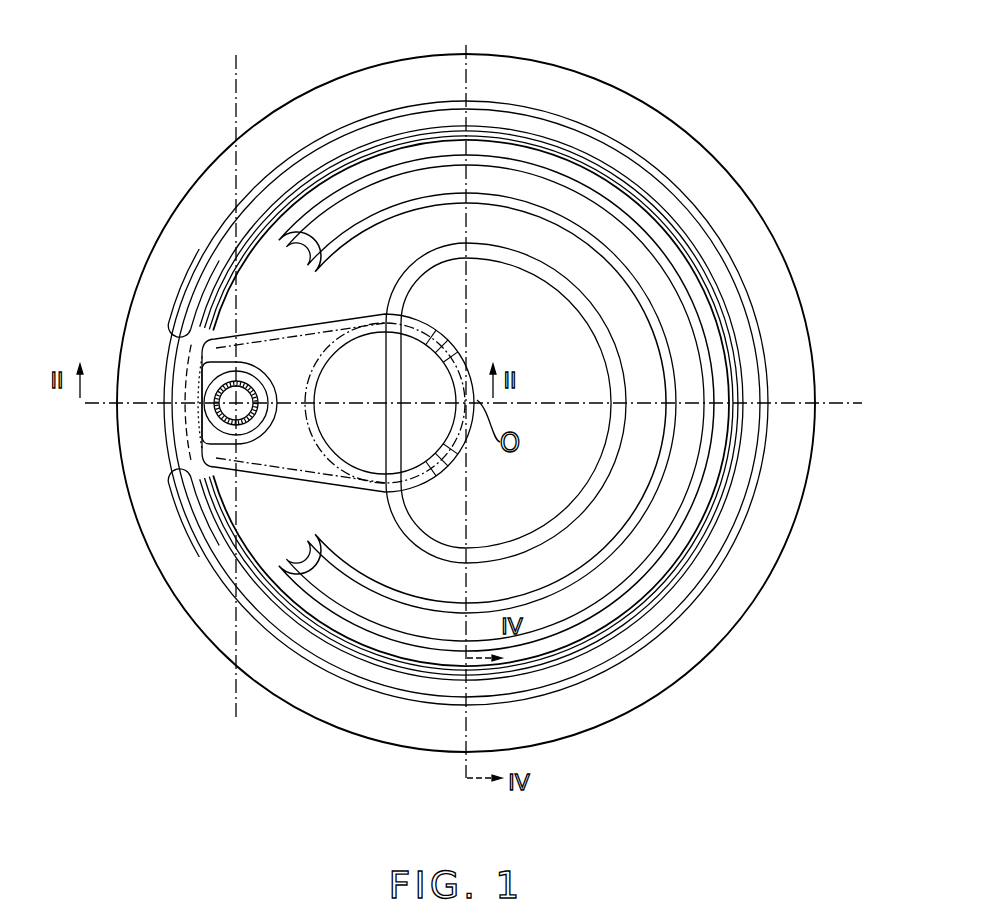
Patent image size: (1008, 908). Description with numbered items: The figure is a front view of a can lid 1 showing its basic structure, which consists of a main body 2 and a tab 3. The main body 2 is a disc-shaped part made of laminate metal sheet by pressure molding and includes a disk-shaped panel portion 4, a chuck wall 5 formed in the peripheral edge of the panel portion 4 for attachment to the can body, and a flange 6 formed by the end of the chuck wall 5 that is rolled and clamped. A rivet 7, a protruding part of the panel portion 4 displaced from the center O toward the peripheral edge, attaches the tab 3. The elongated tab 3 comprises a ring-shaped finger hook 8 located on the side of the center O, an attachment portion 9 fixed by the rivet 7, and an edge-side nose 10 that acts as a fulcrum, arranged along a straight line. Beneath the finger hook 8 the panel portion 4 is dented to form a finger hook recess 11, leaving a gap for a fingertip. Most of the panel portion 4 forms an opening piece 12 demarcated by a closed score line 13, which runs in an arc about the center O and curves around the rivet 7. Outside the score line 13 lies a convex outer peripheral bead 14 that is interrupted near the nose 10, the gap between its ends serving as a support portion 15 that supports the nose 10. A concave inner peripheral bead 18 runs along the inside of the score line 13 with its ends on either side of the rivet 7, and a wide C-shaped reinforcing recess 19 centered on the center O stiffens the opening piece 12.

The can lid 1 is at (671, 47).
The main body 2 is at (747, 197).
The tab 3 is at (293, 320).
The panel portion 4 is at (705, 301).
The chuck wall 5 is at (797, 470).
The flange 6 is at (770, 576).
The rivet 7 is at (250, 420).
The finger hook 8 is at (433, 520).
The attachment portion 9 is at (290, 368).
The nose 10 is at (163, 397).
The finger hook recess 11 is at (590, 385).
The opening piece 12 is at (404, 230).
The score line 13 is at (200, 480).
The outer peripheral bead 14 is at (197, 293).
The support portion 15 is at (165, 440).
The inner peripheral bead 18 is at (245, 488).
The reinforcing recess 19 is at (603, 583).